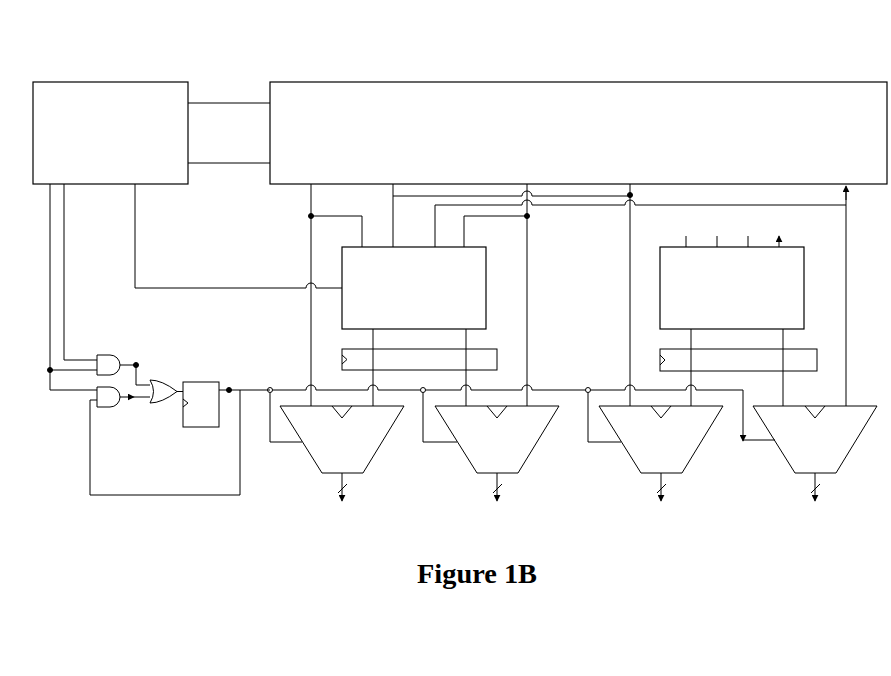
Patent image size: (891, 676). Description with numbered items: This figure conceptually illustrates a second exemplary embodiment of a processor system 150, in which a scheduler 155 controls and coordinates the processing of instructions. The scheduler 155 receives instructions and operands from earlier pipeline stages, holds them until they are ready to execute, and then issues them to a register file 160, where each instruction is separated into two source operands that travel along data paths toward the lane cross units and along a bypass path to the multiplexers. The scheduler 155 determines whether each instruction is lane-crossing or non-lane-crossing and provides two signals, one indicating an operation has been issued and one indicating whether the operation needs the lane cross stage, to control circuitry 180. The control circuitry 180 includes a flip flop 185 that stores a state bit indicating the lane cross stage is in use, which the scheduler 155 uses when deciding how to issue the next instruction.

The processor system 150 is at (781, 62).
The scheduler 155 is at (110, 133).
The register file 160 is at (578, 133).
The control circuitry 180 is at (177, 352).
The flip flop 185 is at (203, 381).